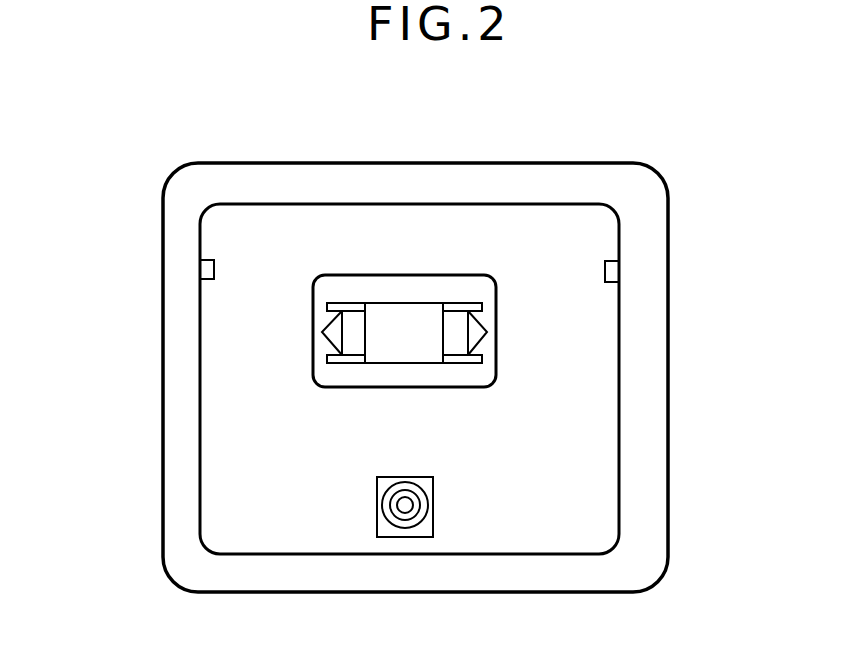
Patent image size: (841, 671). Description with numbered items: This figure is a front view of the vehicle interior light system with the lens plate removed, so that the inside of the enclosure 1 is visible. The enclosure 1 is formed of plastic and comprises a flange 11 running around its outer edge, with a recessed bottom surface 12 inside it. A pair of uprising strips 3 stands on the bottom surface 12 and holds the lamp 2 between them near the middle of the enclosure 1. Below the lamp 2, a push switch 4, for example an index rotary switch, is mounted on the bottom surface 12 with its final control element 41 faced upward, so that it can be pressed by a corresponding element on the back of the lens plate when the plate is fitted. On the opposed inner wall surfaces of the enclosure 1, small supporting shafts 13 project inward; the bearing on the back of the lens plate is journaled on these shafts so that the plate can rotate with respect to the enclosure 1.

The enclosure 1 is at (153, 226).
The flange 11 is at (655, 227).
The bottom surface 12 is at (597, 463).
The supporting shaft 13 is at (214, 268).
The lamp 2 is at (408, 320).
The uprising strips 3 is at (348, 305).
The push switch 4 is at (361, 557).
The final control element 41 is at (404, 505).